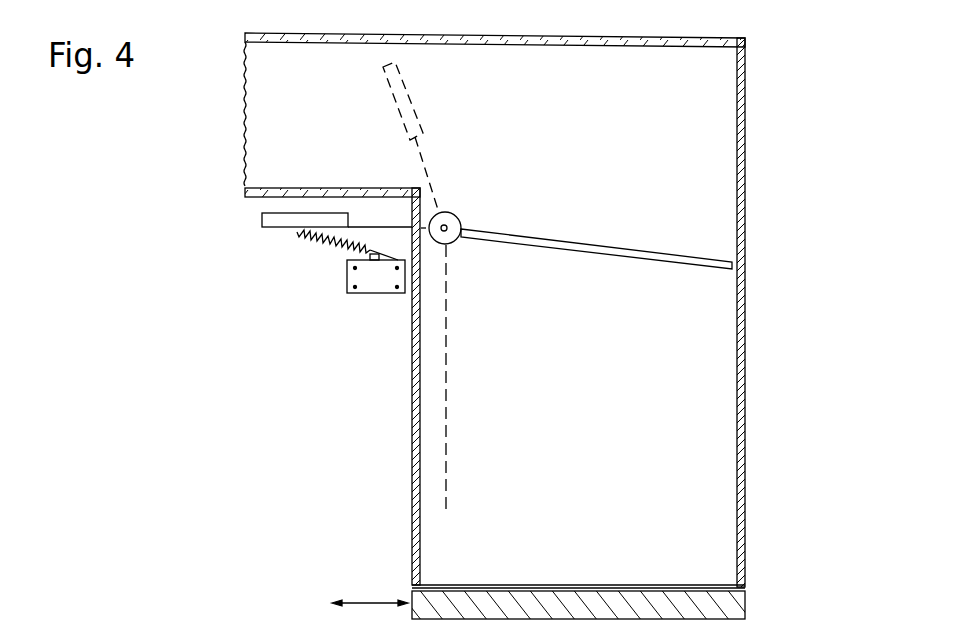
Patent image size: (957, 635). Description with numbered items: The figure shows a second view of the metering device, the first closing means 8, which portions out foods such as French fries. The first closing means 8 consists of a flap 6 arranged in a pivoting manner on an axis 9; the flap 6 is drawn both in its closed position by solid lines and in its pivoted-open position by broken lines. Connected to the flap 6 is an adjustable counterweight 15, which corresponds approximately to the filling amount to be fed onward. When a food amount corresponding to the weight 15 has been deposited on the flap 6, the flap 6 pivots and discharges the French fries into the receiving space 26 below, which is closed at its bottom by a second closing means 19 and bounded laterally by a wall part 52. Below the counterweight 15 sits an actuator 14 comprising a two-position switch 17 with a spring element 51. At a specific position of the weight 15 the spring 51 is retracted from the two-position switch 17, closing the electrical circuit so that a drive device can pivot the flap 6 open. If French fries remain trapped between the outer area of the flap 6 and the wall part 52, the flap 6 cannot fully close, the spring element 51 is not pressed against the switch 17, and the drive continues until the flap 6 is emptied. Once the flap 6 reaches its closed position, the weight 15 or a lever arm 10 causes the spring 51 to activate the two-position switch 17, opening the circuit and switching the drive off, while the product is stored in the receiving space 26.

The first closing means 8 is at (775, 70).
The wall part 52 is at (745, 247).
The receiving space 26 is at (606, 483).
The second closing means 19 is at (730, 603).
The axis 9 is at (449, 223).
The flap 6 is at (565, 241).
The actuator 14 is at (359, 216).
The adjustable counterweight 15 is at (279, 217).
The lever arm 10 is at (372, 225).
The spring element 51 is at (305, 240).
The two-position switch 17 is at (358, 276).